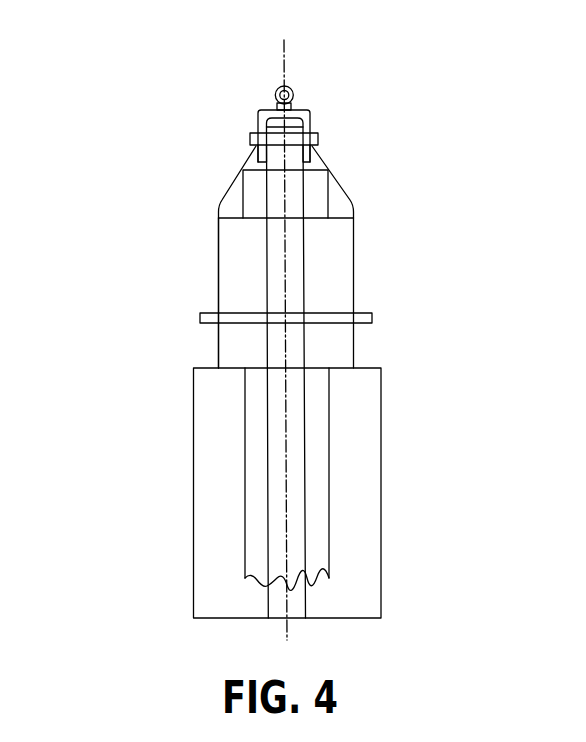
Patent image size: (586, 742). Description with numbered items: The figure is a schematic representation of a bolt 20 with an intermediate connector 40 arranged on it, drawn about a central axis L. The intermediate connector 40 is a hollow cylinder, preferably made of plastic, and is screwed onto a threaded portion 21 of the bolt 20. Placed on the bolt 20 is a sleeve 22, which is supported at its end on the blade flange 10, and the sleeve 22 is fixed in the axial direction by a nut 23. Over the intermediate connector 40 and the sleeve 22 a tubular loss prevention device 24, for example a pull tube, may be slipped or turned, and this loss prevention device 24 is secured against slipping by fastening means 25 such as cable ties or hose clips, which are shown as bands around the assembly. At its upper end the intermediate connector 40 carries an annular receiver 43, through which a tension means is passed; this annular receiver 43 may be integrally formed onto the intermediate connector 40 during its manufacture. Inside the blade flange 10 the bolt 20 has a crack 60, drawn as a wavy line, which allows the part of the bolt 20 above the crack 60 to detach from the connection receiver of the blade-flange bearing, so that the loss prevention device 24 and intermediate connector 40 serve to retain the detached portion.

The blade flange 10 is at (187, 495).
The bolt 20 is at (312, 432).
The threaded portion 21 is at (320, 148).
The sleeve 22 is at (226, 293).
The nut 23 is at (252, 188).
The loss prevention device 24 is at (218, 248).
The fastening means 25 is at (320, 139).
The intermediate connector 40 is at (320, 104).
The annular receiver 43 is at (273, 96).
The crack 60 is at (329, 578).
The longitudinal axis L is at (283, 52).